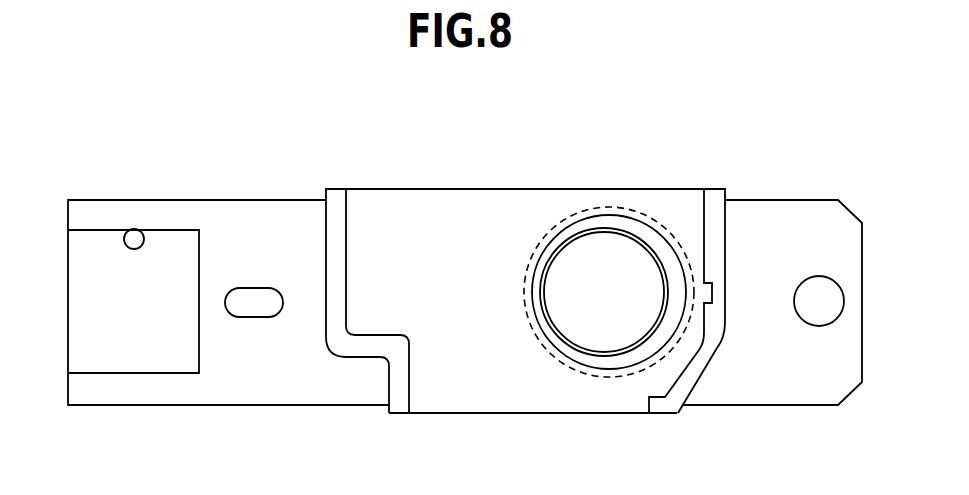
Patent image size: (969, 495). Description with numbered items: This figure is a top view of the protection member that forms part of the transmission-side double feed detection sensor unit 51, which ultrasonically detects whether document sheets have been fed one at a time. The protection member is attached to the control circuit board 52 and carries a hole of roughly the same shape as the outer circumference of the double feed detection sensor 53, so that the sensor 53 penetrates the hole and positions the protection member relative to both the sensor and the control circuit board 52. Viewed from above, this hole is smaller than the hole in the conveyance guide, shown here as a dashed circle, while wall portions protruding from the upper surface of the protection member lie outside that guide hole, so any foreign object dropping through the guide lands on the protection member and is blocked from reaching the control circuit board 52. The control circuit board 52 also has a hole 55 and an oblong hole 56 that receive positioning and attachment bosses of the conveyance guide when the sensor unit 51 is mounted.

The transmission-side double feed detection sensor unit 51 is at (443, 204).
The control circuit board 52 is at (786, 391).
The double feed detection sensor 53 is at (613, 252).
The hole 55 is at (820, 276).
The oblong hole 56 is at (253, 308).